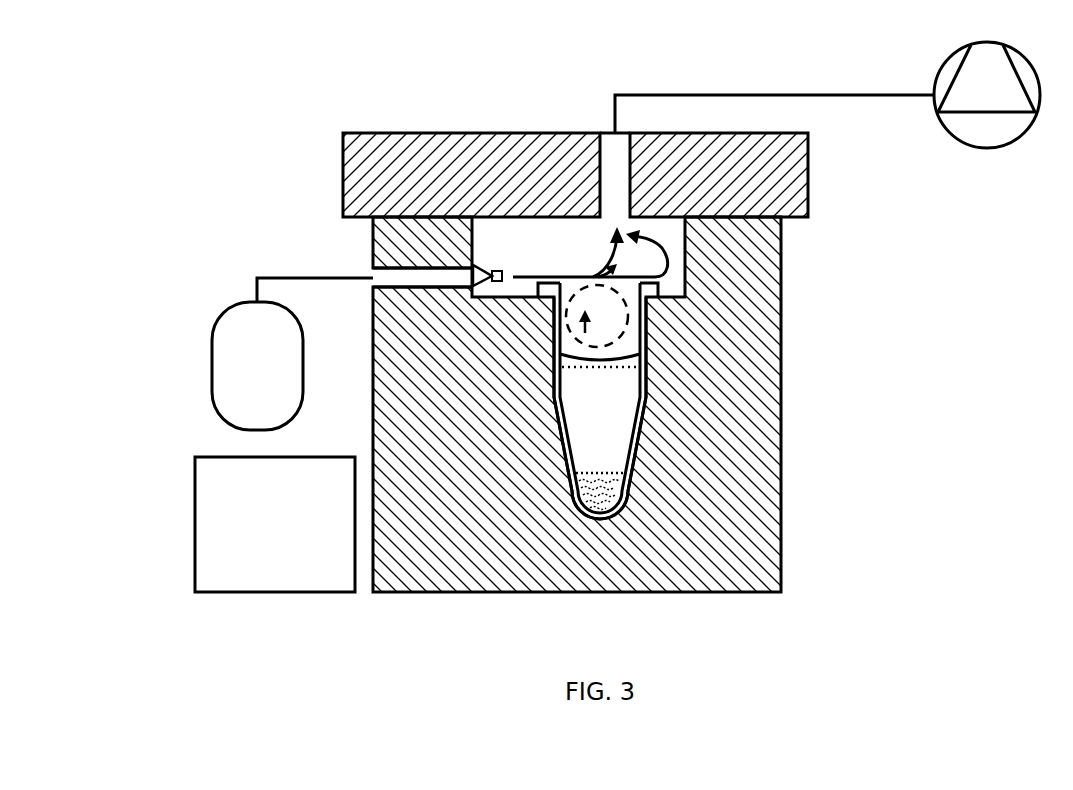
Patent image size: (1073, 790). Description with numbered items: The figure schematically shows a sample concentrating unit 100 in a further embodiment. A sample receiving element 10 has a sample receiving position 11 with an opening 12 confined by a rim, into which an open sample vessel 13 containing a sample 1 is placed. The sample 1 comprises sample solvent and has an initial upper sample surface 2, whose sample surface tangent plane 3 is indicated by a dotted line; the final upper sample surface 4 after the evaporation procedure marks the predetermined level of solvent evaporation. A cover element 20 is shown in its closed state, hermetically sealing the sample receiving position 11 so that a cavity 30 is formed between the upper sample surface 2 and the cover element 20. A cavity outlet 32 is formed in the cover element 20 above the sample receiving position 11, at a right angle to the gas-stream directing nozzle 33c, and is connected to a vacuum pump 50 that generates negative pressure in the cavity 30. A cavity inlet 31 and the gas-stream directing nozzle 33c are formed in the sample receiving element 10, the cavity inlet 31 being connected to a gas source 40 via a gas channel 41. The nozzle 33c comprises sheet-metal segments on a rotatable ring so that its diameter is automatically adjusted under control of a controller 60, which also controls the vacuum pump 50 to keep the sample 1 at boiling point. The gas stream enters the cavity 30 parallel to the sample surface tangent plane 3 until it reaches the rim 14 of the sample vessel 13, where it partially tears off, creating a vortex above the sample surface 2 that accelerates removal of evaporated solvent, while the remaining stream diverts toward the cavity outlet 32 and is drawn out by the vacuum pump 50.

The sample concentrating unit 100 is at (318, 98).
The cover element 20 is at (780, 161).
The cavity outlet 32 is at (618, 183).
The vacuum pump 50 is at (1022, 138).
The sample receiving element 10 is at (467, 498).
The cavity inlet 31 is at (371, 269).
The gas-stream directing nozzle 33c is at (474, 286).
The gas channel 41 is at (253, 292).
The gas source 40 is at (257, 366).
The controller 60 is at (292, 537).
The cavity 30 is at (673, 248).
The rim 14 is at (562, 283).
The sample 1 is at (622, 497).
The opening 12 is at (653, 297).
The sample receiving position 11 is at (650, 368).
The sample vessel 13 is at (642, 418).
The upper sample surface 2 is at (560, 355).
The sample surface tangent plane 3 is at (572, 370).
The final upper sample surface 4 is at (612, 472).